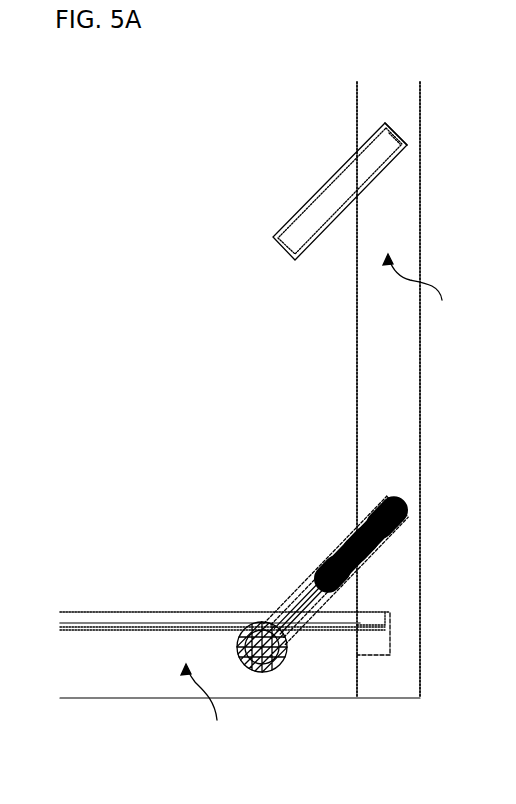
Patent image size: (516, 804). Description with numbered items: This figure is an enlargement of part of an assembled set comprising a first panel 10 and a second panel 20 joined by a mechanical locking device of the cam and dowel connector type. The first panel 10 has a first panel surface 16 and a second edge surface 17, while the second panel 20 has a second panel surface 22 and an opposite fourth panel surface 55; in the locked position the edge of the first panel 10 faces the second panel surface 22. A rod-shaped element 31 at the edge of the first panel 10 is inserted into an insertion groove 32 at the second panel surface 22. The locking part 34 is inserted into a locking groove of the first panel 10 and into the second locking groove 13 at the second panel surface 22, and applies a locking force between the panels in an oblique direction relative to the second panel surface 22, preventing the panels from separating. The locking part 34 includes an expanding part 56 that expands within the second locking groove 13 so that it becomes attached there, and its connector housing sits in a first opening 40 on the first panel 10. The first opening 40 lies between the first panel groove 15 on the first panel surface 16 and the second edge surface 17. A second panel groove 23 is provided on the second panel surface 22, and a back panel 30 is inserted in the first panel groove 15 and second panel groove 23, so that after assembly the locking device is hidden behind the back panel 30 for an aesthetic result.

The first panel 10 is at (205, 706).
The second locking groove 13 is at (396, 514).
The first panel groove 15 is at (95, 627).
The first panel surface 16 is at (122, 377).
The second edge surface 17 is at (357, 420).
The second panel 20 is at (418, 290).
The second panel surface 22 is at (357, 382).
The second panel groove 23 is at (372, 648).
The back panel 30 is at (100, 617).
The rod-shaped element 31 is at (373, 153).
The insertion groove 32 is at (404, 146).
The locking part 34 is at (318, 585).
The first opening 40 is at (270, 672).
The fourth panel surface 55 is at (420, 365).
The expanding part 56 is at (378, 543).